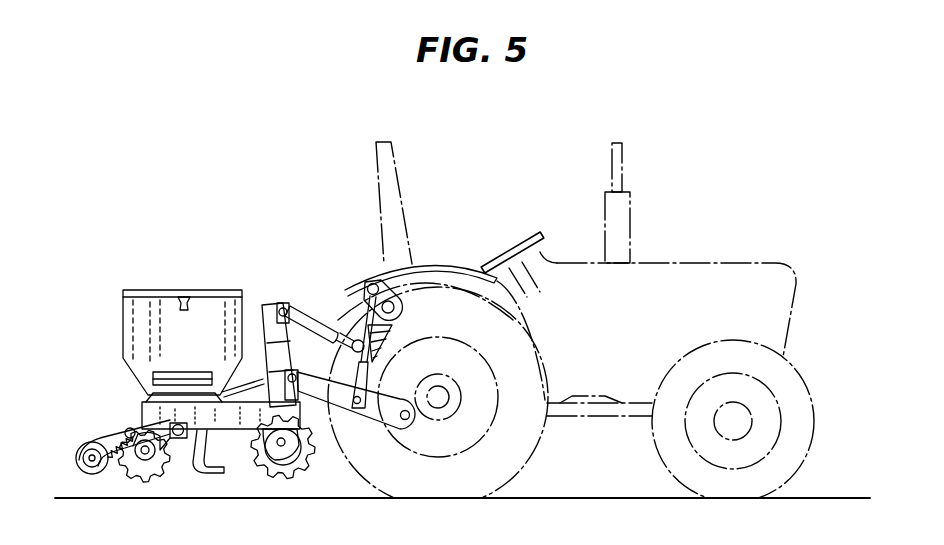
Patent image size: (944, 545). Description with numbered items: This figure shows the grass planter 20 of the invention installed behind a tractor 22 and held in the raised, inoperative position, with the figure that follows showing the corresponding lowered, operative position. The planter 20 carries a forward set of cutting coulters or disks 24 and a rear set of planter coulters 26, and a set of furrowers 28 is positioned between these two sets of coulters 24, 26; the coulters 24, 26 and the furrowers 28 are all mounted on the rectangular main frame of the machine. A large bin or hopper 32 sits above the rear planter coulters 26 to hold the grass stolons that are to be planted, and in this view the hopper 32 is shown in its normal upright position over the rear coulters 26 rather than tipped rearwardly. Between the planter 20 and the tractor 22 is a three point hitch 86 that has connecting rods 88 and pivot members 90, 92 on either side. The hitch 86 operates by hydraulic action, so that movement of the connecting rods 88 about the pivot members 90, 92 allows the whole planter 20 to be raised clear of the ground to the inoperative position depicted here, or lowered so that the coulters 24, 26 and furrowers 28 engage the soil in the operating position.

The grass planter 20 is at (213, 350).
The tractor 22 is at (466, 262).
The cutting coulters 24 is at (311, 454).
The planter coulters 26 is at (162, 470).
The furrowers 28 is at (226, 471).
The hopper 32 is at (132, 308).
The three point hitch 86 is at (329, 290).
The connecting rods 88 is at (395, 320).
The pivot member 90 is at (395, 296).
The pivot member 92 is at (375, 429).